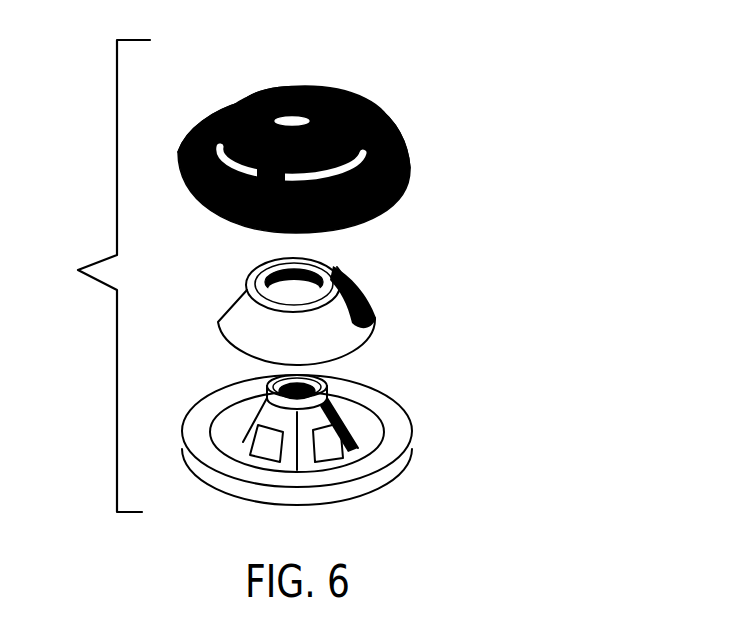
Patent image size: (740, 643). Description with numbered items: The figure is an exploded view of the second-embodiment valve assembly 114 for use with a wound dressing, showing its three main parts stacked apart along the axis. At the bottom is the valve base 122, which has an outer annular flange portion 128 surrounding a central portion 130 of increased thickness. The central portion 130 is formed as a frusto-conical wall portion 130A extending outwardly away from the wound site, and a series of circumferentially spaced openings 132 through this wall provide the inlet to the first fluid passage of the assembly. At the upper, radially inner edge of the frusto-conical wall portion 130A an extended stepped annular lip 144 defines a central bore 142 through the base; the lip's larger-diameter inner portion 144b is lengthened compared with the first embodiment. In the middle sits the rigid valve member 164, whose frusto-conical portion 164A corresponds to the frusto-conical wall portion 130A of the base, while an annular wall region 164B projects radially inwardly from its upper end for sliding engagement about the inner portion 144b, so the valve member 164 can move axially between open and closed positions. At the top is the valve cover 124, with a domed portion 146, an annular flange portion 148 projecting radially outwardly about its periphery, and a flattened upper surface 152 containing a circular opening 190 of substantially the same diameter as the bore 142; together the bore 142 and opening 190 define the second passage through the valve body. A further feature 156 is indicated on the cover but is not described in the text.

The valve assembly 114 is at (75, 276).
The valve base 122 is at (343, 435).
The valve cover 124 is at (405, 134).
The outer annular flange portion 128 is at (364, 490).
The central portion 130 is at (366, 423).
The frusto-conical wall portion 130A is at (249, 409).
The openings 132 is at (244, 429).
The central bore 142 is at (282, 378).
The stepped annular lip 144 is at (320, 379).
The inner portion of lip 144b is at (297, 414).
The domed portion 146 is at (353, 110).
The annular flange portion 148 is at (408, 176).
The flattened upper surface 152 is at (283, 90).
The slot ends 156 is at (380, 209).
The valve member 164 is at (337, 301).
The frusto-conical portion 164A is at (376, 313).
The annular wall region 164B is at (338, 264).
The circular opening 190 is at (300, 88).